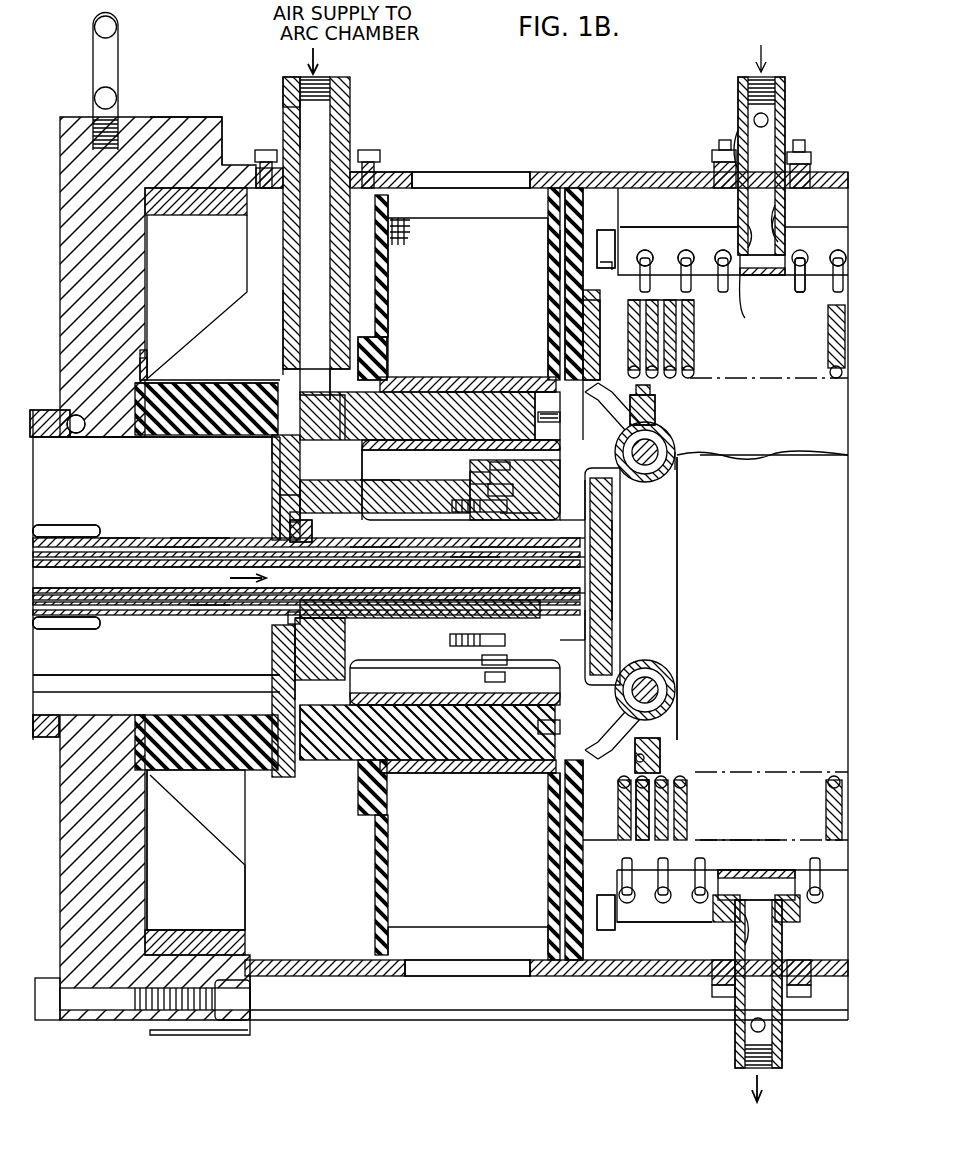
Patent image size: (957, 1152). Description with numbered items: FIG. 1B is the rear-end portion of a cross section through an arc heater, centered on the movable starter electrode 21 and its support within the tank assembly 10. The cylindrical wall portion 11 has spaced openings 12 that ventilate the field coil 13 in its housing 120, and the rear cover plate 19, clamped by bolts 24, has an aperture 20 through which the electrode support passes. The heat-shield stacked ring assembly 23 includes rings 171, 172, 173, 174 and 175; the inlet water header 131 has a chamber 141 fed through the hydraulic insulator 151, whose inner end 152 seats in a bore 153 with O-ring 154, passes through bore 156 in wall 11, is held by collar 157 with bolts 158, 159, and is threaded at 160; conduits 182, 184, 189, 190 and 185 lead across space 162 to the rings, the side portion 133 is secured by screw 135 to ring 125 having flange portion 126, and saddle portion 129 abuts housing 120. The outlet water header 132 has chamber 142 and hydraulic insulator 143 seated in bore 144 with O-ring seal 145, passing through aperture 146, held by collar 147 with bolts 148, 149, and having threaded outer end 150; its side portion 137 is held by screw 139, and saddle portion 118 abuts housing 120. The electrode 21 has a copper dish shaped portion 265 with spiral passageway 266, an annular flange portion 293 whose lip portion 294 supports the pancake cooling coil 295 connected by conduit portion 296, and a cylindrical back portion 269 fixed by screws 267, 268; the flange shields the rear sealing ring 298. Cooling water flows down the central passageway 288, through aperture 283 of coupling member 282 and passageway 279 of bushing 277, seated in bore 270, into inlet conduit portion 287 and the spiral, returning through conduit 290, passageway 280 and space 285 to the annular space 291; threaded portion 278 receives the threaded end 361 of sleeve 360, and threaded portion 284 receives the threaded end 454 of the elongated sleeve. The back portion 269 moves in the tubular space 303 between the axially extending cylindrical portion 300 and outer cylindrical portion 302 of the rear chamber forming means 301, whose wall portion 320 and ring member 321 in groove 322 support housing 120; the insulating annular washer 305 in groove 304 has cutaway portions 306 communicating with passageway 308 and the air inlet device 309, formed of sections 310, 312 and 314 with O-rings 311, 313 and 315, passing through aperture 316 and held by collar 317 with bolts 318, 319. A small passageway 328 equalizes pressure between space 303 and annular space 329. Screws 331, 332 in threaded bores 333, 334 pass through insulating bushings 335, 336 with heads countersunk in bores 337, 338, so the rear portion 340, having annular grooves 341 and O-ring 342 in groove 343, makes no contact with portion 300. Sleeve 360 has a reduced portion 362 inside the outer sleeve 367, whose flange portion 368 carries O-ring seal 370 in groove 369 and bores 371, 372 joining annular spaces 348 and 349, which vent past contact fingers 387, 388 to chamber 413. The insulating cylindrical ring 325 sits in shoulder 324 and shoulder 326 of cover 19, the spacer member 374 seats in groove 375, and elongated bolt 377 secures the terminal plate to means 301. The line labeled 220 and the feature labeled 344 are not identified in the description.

The cover plate 19 is at (80, 120).
The tank assembly 10 is at (198, 118).
The third section 314 is at (292, 90).
The O-ring 315 is at (292, 140).
The bolt 318 is at (275, 140).
The bolt 319 is at (368, 148).
The collar 317 is at (378, 162).
The spaced openings 12 is at (438, 178).
The cylindrical wall portion 11 is at (570, 172).
The saddle portion 129 is at (585, 175).
The bolt 158 is at (716, 150).
The collar 157 is at (714, 166).
The bore 156 is at (744, 135).
The threaded upper end 160 is at (778, 80).
The hydraulic insulator 151 is at (780, 112).
The bolt 159 is at (800, 152).
The extended side portion 133 is at (606, 228).
The water header 131 is at (686, 222).
The O-ring 154 is at (748, 220).
The inner end 152 is at (776, 210).
The bore 153 is at (782, 222).
The conduit 182 is at (634, 268).
The conduit 184 is at (674, 268).
The conduit 189 is at (712, 268).
The conduit 185 is at (820, 270).
The chamber 141 is at (765, 265).
The conduit 190 is at (815, 300).
The ring 171 is at (632, 292).
The ring 172 is at (650, 302).
The ring 173 is at (668, 310).
The ring 174 is at (684, 323).
The space 162 is at (748, 295).
The ring 175 is at (832, 336).
The stacked ring assembly 23 is at (697, 355).
The field coil 13 is at (475, 288).
The screw 135 is at (560, 255).
The aperture 316 is at (272, 195).
The annular shoulder 326 is at (148, 348).
The air inlet device 309 is at (285, 306).
The section 312 is at (284, 330).
The O-ring 313 is at (284, 350).
The first section 310 is at (284, 366).
The O-ring seal 311 is at (292, 376).
The ring member 321 is at (388, 348).
The portion 320 is at (540, 380).
The screw 267 is at (592, 402).
The conduit portion 296 is at (655, 410).
The spiral passageway 266 is at (660, 450).
The dish shaped portion 265 is at (672, 482).
The line 220 is at (765, 457).
The groove 322 is at (368, 400).
The annular grooves 341 is at (456, 395).
The cutaway portion 306 is at (535, 420).
The groove 375 is at (78, 433).
The cylindrical spacer member 374 is at (44, 440).
The aperture 20 is at (118, 440).
The cylindrical ring 325 is at (165, 435).
The annular shoulder 324 is at (272, 445).
The rear chamber forming means 301 is at (282, 466).
The O-ring seal 370 is at (280, 500).
The annular groove 369 is at (288, 515).
The flange portion 368 is at (288, 528).
The passageway 308 is at (318, 432).
The cylindrical back portion 269 is at (418, 452).
The insulating bushing 335 is at (490, 470).
The threaded bore 333 is at (470, 480).
The axially extending cylindrical portion 300 is at (402, 493).
The screw 331 is at (488, 492).
The bore 371 is at (312, 525).
The sleeve 360 is at (370, 530).
The annular groove 343 is at (452, 508).
The contact finger 387 is at (76, 526).
The outer sleeve 367 is at (115, 532).
The portion of reduced outer diameter 362 is at (172, 540).
The annular space 349 is at (190, 538).
The ring 344 is at (592, 498).
The bore 337 is at (575, 522).
The inlet conduit portion 287 is at (620, 530).
The O-ring 342 is at (580, 540).
The passageway 279 is at (620, 550).
The central passageway 288 is at (306, 577).
The annular space 348 is at (385, 550).
The threaded end 454 is at (460, 560).
The threaded portion 278 is at (488, 550).
The threaded end 361 is at (505, 520).
The internally threaded portion 284 is at (528, 548).
The bushing 277 is at (580, 556).
The aperture 283 is at (620, 566).
The coupling member 282 is at (580, 572).
The space 285 is at (620, 585).
The passageway 280 is at (578, 594).
The circular bore 270 is at (620, 604).
The conduit 290 is at (590, 620).
The bore 338 is at (585, 640).
The movable rear electrode 21 is at (678, 676).
The contact finger 388 is at (78, 628).
The annular space 291 is at (208, 605).
The annular space 329 is at (285, 618).
The chamber 413 is at (172, 650).
The elongated bolt 377 is at (55, 672).
The small passageway 328 is at (290, 660).
The bore 372 is at (312, 630).
The screw 332 is at (450, 640).
The space 303 is at (398, 677).
The threaded bore 334 is at (480, 660).
The insulating bushing 336 is at (485, 680).
The outer cylindrical portion 302 is at (400, 748).
The rear portion 340 is at (470, 725).
The annular washer 305 is at (540, 730).
The screw 268 is at (570, 745).
The pancake cooling coil 295 is at (652, 745).
The annular flange portion 293 is at (660, 755).
The lip portion 294 is at (648, 770).
The annular groove 304 is at (510, 765).
The rear sealing ring 298 is at (560, 788).
The flange portion 126 is at (580, 808).
The ring 125 is at (570, 855).
The screw 139 is at (575, 888).
The housing 120 is at (550, 935).
The saddle portion 118 is at (572, 975).
The extended side portion 137 is at (598, 928).
The water header 132 is at (655, 916).
The chamber 142 is at (758, 880).
The O-ring seal 145 is at (798, 908).
The bore 144 is at (740, 938).
The aperture 146 is at (782, 955).
The collar 147 is at (710, 983).
The bolt 148 is at (708, 995).
The bolt 149 is at (790, 993).
The hydraulic insulator 143 is at (735, 1030).
The threaded outer end 150 is at (745, 1065).
The bolt 24 is at (80, 1005).